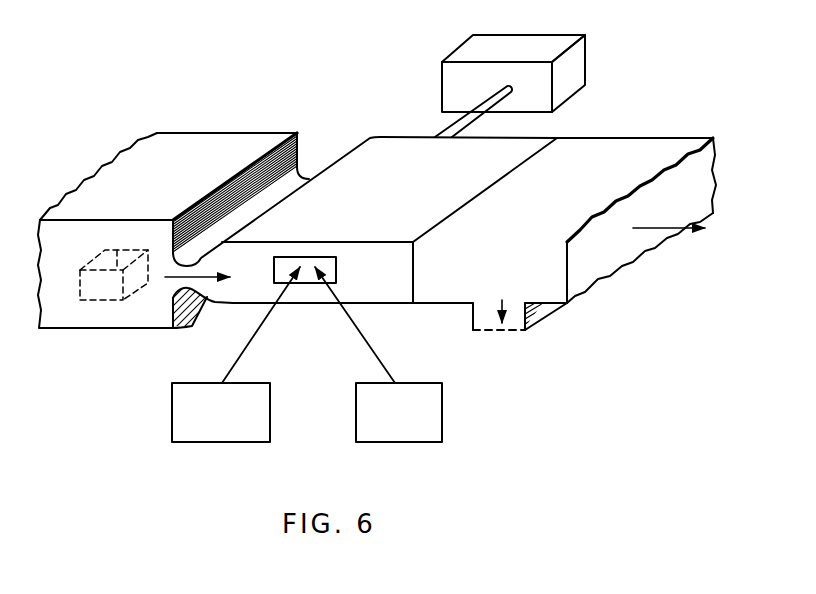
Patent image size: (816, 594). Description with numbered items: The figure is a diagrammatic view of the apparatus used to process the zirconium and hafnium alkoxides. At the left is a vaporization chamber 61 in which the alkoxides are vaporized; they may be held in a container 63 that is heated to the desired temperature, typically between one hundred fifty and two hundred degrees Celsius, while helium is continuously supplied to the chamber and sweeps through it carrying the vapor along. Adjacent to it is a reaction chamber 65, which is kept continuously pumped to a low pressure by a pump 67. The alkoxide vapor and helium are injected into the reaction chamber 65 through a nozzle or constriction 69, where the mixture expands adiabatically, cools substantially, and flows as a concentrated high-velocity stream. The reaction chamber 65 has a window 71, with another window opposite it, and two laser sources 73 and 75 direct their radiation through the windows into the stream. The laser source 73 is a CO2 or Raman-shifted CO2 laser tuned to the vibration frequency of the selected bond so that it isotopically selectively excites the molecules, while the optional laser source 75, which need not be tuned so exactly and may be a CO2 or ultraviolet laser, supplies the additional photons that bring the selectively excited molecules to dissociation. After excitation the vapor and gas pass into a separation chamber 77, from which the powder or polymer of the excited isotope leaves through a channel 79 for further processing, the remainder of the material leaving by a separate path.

The vaporization chamber 61 is at (240, 138).
The container 63 is at (105, 288).
The reaction chamber 65 is at (385, 146).
The pump 67 is at (563, 42).
The nozzle or constriction 69 is at (193, 282).
The window 71 is at (336, 275).
The laser source 73 is at (178, 441).
The laser source 75 is at (432, 439).
The separation chamber 77 is at (615, 150).
The channel 79 is at (482, 318).